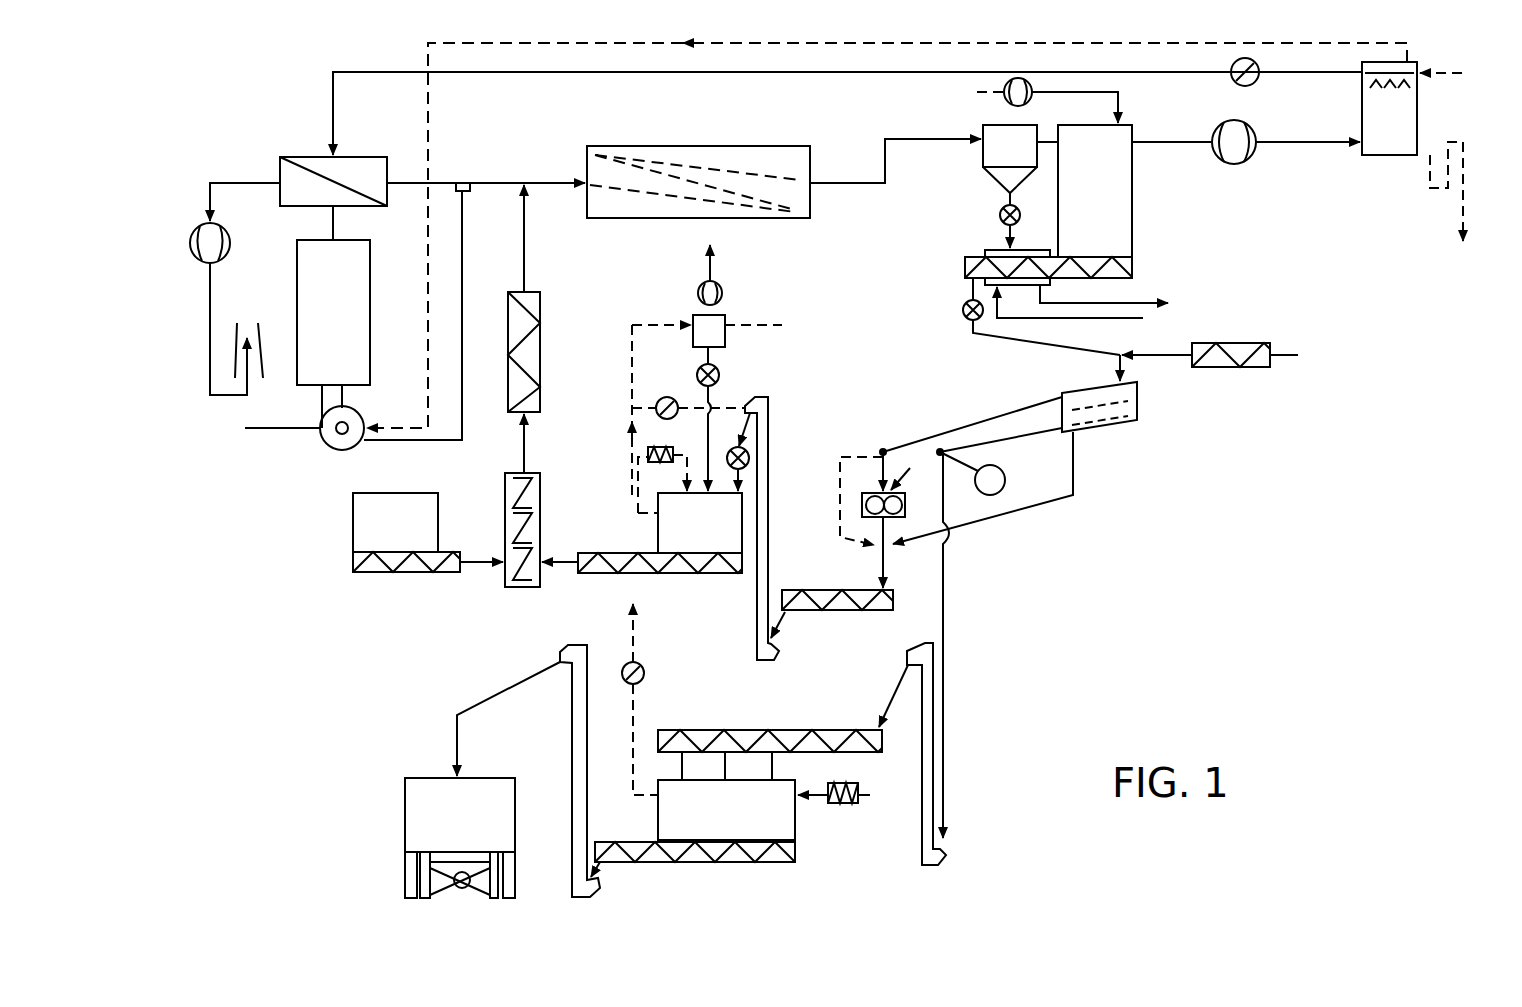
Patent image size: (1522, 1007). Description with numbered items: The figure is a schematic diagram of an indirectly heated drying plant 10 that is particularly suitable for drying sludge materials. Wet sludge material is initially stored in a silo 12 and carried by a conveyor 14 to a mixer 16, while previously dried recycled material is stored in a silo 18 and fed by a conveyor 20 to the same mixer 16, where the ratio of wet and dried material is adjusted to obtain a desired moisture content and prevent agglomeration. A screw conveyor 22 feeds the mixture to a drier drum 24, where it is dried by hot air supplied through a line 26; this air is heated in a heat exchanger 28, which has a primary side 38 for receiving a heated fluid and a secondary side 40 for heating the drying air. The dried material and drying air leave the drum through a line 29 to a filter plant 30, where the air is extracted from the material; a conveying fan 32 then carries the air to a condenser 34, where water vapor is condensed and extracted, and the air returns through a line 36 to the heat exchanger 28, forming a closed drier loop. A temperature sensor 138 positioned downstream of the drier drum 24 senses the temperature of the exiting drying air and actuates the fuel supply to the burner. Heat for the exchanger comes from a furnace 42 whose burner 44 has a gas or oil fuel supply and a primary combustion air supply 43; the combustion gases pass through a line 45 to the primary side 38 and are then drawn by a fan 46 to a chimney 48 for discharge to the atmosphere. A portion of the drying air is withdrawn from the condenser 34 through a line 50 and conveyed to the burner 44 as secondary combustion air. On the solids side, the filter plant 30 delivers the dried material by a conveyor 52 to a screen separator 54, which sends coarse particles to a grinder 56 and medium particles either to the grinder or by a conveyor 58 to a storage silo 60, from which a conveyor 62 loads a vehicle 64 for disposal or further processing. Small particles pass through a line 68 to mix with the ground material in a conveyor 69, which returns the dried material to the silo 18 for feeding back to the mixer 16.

The drying plant 10 is at (1240, 460).
The silo 12 is at (352, 517).
The conveyor 14 is at (393, 574).
The mixer 16 is at (515, 588).
The silo 18 is at (695, 537).
The conveyor 20 is at (605, 575).
The screw conveyor 22 is at (543, 330).
The drier drum 24 is at (770, 220).
The line 26 is at (493, 181).
The heat exchanger 28 is at (363, 156).
The line 29 is at (862, 185).
The filter plant 30 is at (1186, 194).
The conveying fan 32 is at (1245, 163).
The condenser 34 is at (1420, 113).
The line 36 is at (683, 73).
The primary side 38 is at (287, 171).
The secondary side 40 is at (323, 165).
The furnace 42 is at (369, 348).
The primary combustion air supply 43 is at (263, 429).
The burner 44 is at (333, 450).
The line 45 is at (335, 225).
The fan 46 is at (191, 241).
The chimney 48 is at (266, 332).
The line 50 is at (772, 43).
The conveyor 52 is at (1133, 270).
The screen separator 54 is at (1113, 434).
The grinder 56 is at (868, 492).
The conveyor 58 is at (743, 729).
The storage silo 60 is at (785, 817).
The conveyor 62 is at (797, 856).
The vehicle 64 is at (405, 828).
The line 68 is at (882, 565).
The conveyor 69 is at (827, 611).
The temperature sensor 138 is at (473, 193).